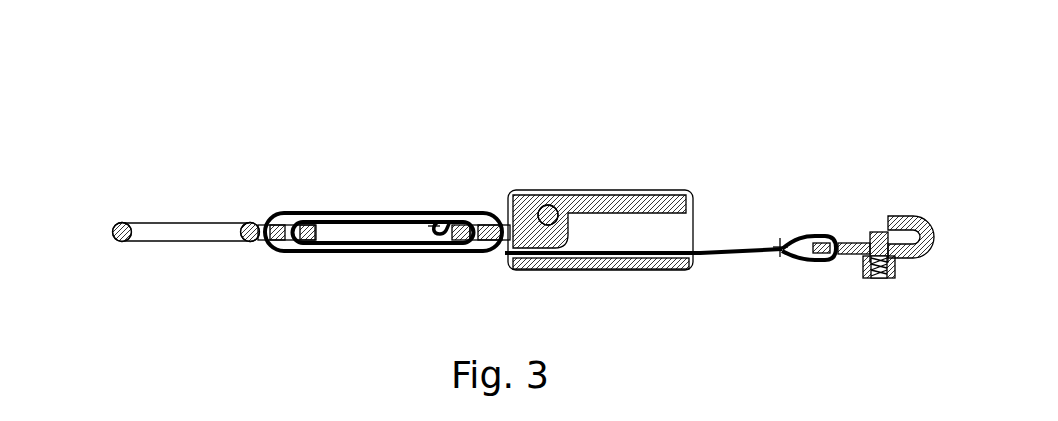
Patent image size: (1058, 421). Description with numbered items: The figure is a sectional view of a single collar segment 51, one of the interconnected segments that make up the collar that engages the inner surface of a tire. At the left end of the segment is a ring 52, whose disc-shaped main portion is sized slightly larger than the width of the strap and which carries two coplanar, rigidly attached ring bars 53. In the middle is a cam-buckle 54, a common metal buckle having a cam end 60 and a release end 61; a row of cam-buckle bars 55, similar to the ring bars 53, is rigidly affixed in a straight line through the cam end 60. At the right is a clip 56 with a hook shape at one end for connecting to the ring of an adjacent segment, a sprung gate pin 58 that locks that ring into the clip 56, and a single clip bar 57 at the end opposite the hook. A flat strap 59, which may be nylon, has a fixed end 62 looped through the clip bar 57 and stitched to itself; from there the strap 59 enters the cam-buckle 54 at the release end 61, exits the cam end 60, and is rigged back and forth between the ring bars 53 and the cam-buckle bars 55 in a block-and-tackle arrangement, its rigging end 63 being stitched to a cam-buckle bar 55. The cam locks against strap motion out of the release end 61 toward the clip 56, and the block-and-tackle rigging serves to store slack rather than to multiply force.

The collar segment 51 is at (650, 176).
The ring 52 is at (113, 225).
The ring bars 53 is at (279, 196).
The cam-buckle 54 is at (577, 192).
The cam-buckle bars 55 is at (467, 200).
The clip 56 is at (852, 238).
The clip bar 57 is at (824, 216).
The sprung gate pin 58 is at (897, 270).
The strap 59 is at (328, 217).
The cam end 60 is at (512, 260).
The release end 61 is at (693, 260).
The fixed end 62 is at (779, 216).
The rigging end 63 is at (405, 191).